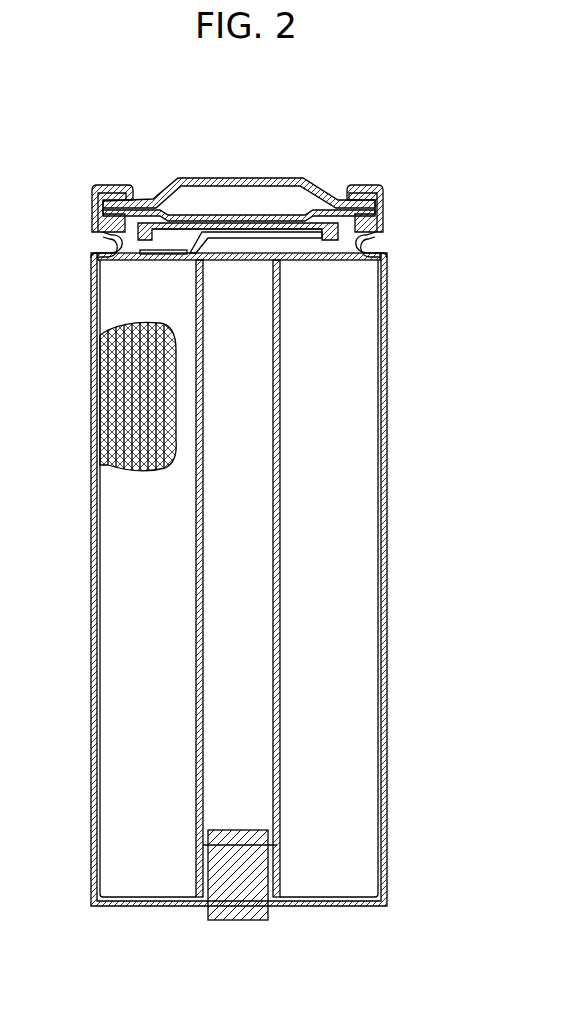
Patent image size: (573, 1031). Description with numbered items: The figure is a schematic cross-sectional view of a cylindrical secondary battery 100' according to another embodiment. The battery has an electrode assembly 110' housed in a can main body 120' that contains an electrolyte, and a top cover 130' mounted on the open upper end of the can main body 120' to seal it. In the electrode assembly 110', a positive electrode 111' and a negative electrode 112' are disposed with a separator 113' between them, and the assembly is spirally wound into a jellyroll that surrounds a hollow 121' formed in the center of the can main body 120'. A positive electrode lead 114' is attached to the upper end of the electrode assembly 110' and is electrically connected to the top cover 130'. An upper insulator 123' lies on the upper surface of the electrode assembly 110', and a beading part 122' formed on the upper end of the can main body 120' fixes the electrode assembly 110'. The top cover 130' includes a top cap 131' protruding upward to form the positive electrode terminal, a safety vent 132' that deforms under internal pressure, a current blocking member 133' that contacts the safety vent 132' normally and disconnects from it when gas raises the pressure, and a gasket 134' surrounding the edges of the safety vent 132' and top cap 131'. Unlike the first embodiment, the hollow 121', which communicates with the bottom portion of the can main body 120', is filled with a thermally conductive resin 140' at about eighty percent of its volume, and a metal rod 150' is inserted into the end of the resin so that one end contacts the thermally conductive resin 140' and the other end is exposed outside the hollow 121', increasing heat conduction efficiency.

The secondary battery 100' is at (271, 532).
The electrode assembly 110' is at (104, 416).
The positive electrode 111' is at (94, 400).
The negative electrode 112' is at (98, 400).
The separator 113' is at (90, 400).
The positive electrode lead 114' is at (237, 181).
The can main body 120' is at (210, 579).
The hollow 121' is at (238, 578).
The beading part 122' is at (210, 241).
The upper insulator 123' is at (206, 270).
The top cover 130' is at (300, 202).
The top cap 131' is at (272, 201).
The safety vent 132' is at (277, 200).
The current blocking member 133' is at (296, 250).
The gasket 134' is at (277, 228).
The thermally conductive resin 140' is at (325, 805).
The metal rod 150' is at (238, 906).